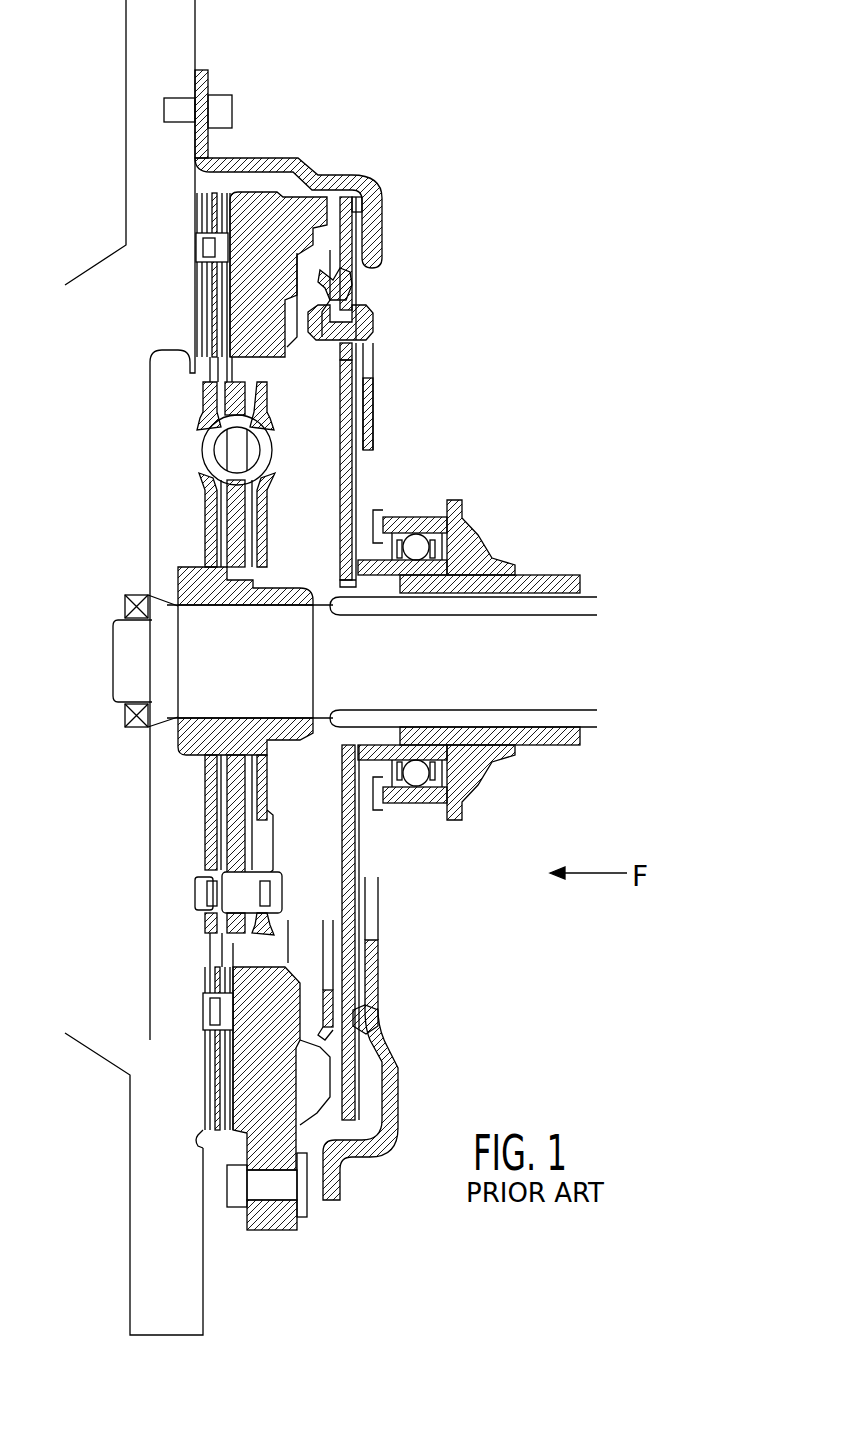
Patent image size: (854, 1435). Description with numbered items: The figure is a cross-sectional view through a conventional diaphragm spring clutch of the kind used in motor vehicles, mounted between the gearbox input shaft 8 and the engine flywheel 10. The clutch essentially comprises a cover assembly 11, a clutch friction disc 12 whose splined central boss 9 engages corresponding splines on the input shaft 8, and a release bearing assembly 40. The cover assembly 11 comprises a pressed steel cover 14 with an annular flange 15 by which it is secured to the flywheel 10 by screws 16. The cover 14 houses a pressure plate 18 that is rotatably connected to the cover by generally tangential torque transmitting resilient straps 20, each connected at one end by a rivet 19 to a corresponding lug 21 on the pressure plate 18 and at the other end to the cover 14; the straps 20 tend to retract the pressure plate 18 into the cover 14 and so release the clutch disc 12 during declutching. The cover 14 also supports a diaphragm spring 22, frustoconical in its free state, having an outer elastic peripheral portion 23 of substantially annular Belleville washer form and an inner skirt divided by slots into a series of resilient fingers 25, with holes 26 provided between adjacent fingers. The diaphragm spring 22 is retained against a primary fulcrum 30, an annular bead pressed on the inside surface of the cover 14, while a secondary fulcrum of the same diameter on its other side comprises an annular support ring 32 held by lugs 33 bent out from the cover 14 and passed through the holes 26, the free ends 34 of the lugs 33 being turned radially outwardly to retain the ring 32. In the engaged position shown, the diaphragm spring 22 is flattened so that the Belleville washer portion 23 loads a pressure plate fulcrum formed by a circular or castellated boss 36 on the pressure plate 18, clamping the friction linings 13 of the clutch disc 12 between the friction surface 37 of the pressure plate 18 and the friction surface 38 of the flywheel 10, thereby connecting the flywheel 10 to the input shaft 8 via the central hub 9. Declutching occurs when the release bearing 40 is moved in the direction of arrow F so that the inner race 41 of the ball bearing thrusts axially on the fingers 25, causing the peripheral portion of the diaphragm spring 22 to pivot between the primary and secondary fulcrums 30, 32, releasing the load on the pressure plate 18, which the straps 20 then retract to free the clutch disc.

The gearbox input shaft 8 is at (547, 697).
The splined central boss 9 is at (178, 580).
The engine flywheel 10 is at (133, 38).
The cover assembly 11 is at (405, 1093).
The clutch friction disc 12 is at (203, 400).
The friction linings 13 is at (205, 212).
The pressed steel cover 14 is at (288, 157).
The annular flange 15 is at (210, 80).
The screws 16 is at (228, 108).
The pressure plate 18 is at (252, 307).
The rivet 19 is at (237, 1203).
The torque transmitting resilient straps 20 is at (305, 1224).
The lug 21 is at (273, 1228).
The diaphragm spring 22 is at (357, 858).
The outer elastic peripheral portion 23 is at (354, 208).
The resilient fingers 25 is at (352, 488).
The holes 26 is at (348, 347).
The primary fulcrum 30 is at (373, 1027).
The annular support ring 32 is at (323, 277).
The lugs 33 is at (377, 327).
The free ends 34 is at (311, 330).
The boss 36 is at (330, 213).
The friction surface 37 is at (237, 1130).
The friction surface 38 is at (205, 953).
The release bearing assembly 40 is at (467, 542).
The inner race 41 is at (370, 770).